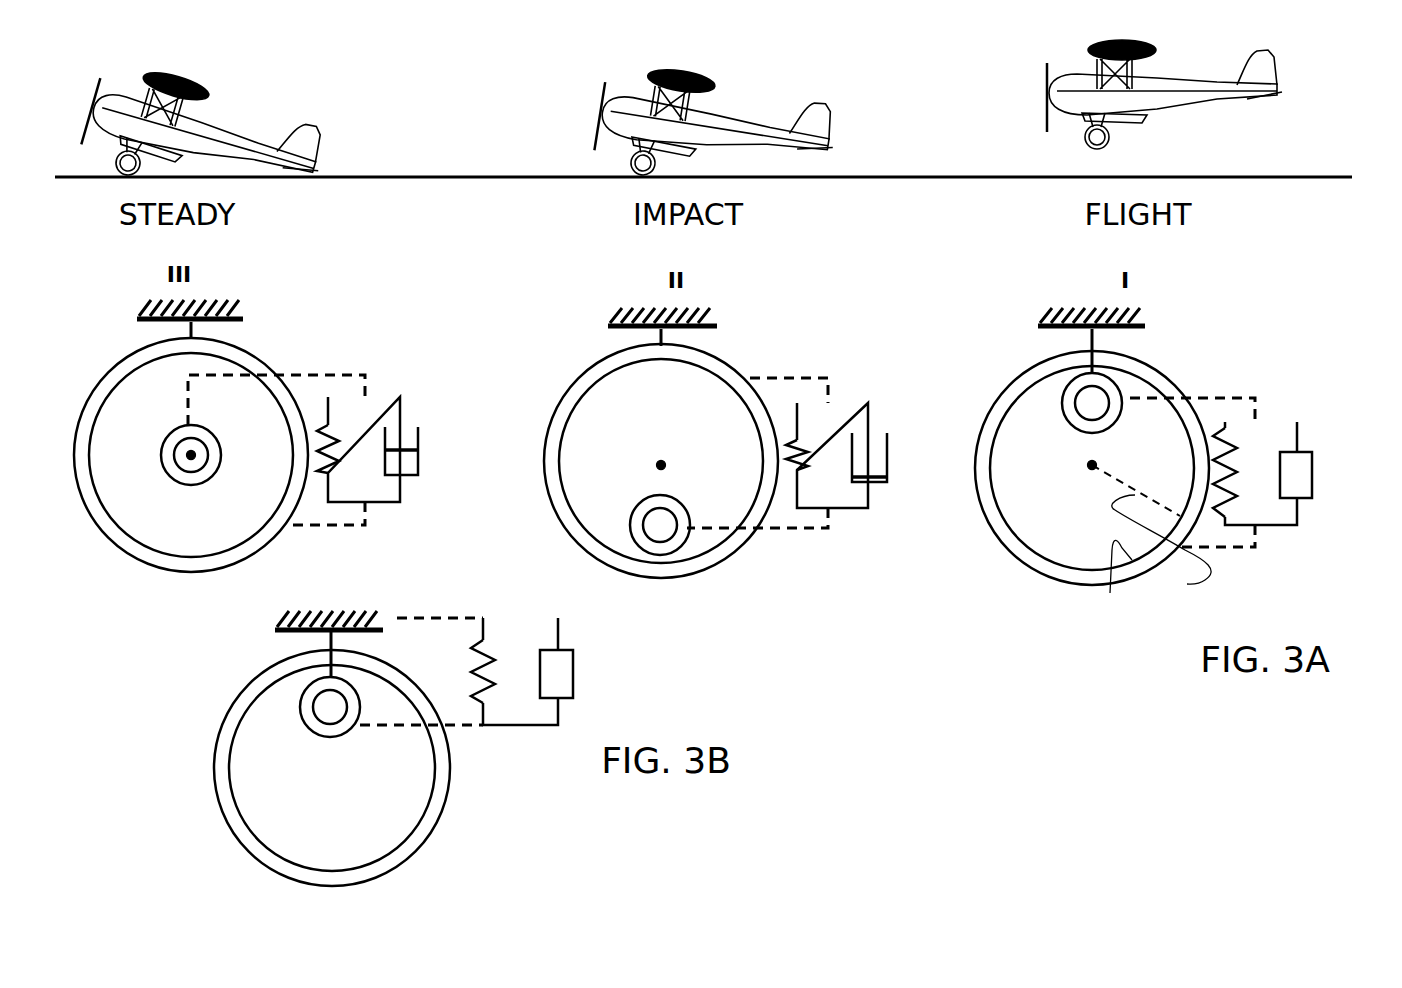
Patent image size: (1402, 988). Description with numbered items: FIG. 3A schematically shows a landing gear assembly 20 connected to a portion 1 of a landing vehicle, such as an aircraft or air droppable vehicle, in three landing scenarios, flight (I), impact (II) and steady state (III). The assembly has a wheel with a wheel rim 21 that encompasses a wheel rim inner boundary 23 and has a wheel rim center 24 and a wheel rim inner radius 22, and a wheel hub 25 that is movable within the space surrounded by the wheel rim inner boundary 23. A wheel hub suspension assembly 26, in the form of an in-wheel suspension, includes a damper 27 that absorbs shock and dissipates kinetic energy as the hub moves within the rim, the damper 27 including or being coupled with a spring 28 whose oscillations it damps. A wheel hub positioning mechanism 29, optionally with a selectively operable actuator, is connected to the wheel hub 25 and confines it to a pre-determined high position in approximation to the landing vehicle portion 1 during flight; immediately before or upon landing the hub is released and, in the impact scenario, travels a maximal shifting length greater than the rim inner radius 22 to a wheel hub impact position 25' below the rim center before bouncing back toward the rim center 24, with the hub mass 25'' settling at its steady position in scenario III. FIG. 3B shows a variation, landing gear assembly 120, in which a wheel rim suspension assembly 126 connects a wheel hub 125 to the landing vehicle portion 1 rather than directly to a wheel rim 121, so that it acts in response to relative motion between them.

In FIG. 3A, the landing vehicle portion 1 is at (137, 300).
In FIG. 3B, the landing vehicle portion 1 is at (275, 619).
In FIG. 3A, the landing gear assembly 20 is at (286, 322).
In FIG. 3A, the wheel rim 21 is at (107, 538).
In FIG. 3A, the wheel rim inner radius 22 is at (1151, 530).
In FIG. 3A, the wheel rim inner boundary 23 is at (1113, 580).
In FIG. 3A, the wheel rim center 24 is at (189, 455).
In FIG. 3A, the wheel hub 25 is at (1129, 386).
In FIG. 3A, the wheel hub impact position 25' is at (702, 543).
In FIG. 3A, the mass (steady position) 25'' is at (241, 497).
In FIG. 3A, the wheel hub suspension assembly 26 is at (1272, 396).
In FIG. 3A, the damper 27 is at (418, 453).
In FIG. 3A, the spring 28 is at (333, 467).
In FIG. 3A, the wheel hub positioning mechanism 29 is at (1124, 338).
In FIG. 3B, the landing gear assembly 120 is at (463, 813).
In FIG. 3B, the wheel rim 121 is at (230, 823).
In FIG. 3B, the wheel hub 125 is at (358, 688).
In FIG. 3B, the wheel rim suspension assembly 126 is at (500, 747).